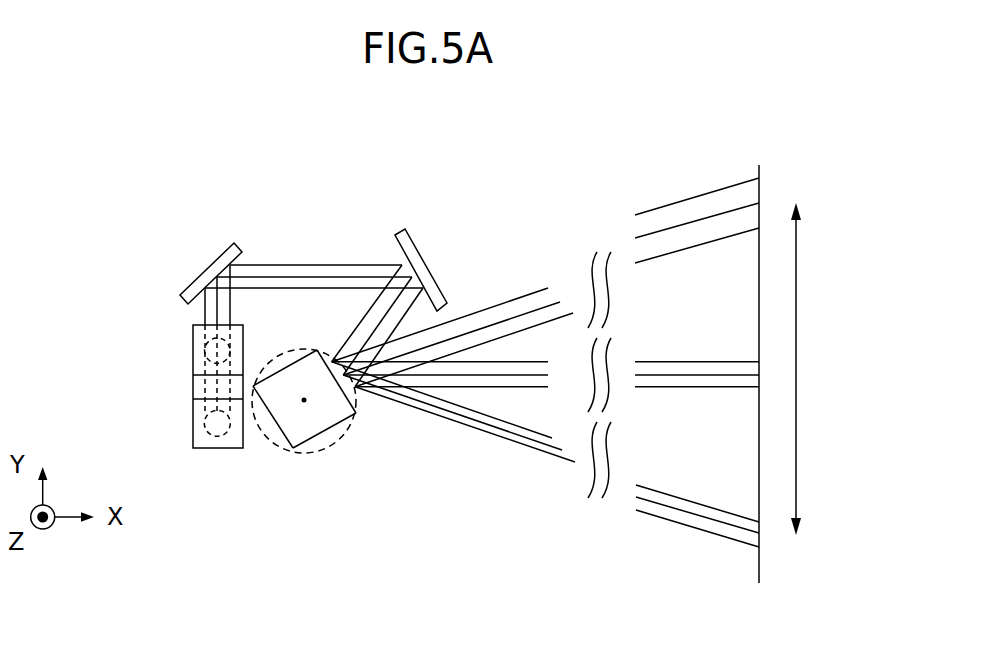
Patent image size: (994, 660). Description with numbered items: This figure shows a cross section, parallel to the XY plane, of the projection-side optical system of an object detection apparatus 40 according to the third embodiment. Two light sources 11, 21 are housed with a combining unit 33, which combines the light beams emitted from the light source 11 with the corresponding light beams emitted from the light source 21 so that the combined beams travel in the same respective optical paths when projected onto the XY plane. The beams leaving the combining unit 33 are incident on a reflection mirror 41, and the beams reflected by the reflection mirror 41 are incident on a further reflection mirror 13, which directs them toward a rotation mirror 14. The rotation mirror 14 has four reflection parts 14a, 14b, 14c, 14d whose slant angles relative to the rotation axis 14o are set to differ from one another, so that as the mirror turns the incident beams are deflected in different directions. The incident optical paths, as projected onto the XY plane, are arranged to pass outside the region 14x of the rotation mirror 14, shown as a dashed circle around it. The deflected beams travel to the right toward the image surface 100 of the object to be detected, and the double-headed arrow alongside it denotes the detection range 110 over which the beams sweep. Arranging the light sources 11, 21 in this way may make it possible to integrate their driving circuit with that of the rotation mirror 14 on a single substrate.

The object detection apparatus 40 is at (75, 163).
The reflection mirror 41 is at (216, 243).
The reflection mirror 13 is at (400, 229).
The combining unit 33 is at (183, 387).
The light source 11 is at (195, 365).
The light source 21 is at (195, 438).
The rotation mirror 14 is at (324, 420).
The reflection part 14a is at (357, 411).
The reflection part 14b is at (253, 368).
The reflection part 14c is at (277, 436).
The reflection part 14d is at (330, 431).
The rotation axis 14o is at (303, 401).
The region of the rotation mirror 14x is at (272, 420).
The image surface 100 is at (759, 173).
The detection range 110 is at (797, 362).